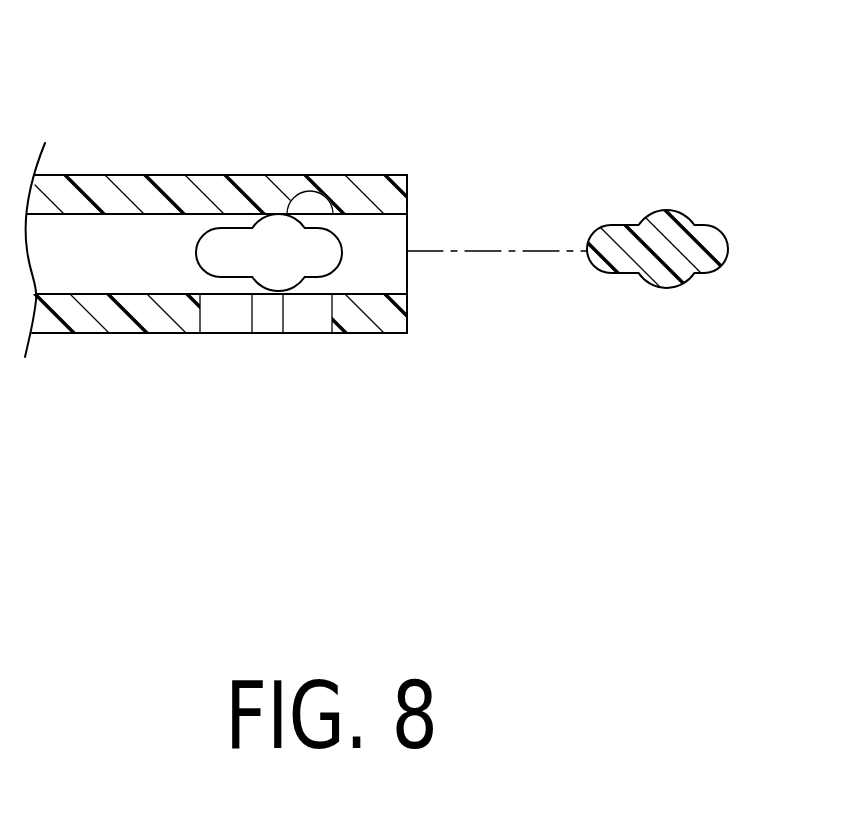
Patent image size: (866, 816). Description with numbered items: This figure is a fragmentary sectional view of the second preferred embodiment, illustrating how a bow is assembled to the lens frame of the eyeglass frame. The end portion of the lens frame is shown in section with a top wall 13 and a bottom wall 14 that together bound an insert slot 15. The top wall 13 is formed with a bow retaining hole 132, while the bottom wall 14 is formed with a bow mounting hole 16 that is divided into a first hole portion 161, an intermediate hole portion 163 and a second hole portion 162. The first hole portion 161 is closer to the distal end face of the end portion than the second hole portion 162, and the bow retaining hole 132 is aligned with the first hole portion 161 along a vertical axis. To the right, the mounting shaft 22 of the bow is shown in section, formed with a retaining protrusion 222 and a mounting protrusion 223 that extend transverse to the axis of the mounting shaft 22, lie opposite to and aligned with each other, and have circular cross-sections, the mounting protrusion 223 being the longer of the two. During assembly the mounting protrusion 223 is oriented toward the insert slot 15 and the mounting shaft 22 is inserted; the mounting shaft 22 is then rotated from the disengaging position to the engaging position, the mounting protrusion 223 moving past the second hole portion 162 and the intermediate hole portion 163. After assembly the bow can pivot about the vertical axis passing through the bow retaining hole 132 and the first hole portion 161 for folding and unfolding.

The top wall 13 is at (168, 192).
The bow retaining hole 132 is at (313, 190).
The insert slot 15 is at (103, 253).
The mounting shaft 22 is at (231, 228).
The retaining protrusion 222 is at (710, 243).
The mounting protrusion 223 is at (617, 257).
The bottom wall 14 is at (367, 323).
The bow mounting hole 16 is at (227, 418).
The second hole portion 162 is at (218, 318).
The intermediate hole portion 163 is at (263, 320).
The first hole portion 161 is at (268, 332).